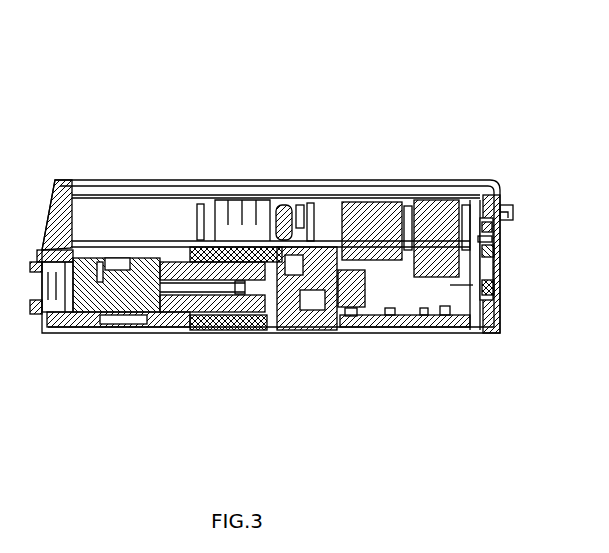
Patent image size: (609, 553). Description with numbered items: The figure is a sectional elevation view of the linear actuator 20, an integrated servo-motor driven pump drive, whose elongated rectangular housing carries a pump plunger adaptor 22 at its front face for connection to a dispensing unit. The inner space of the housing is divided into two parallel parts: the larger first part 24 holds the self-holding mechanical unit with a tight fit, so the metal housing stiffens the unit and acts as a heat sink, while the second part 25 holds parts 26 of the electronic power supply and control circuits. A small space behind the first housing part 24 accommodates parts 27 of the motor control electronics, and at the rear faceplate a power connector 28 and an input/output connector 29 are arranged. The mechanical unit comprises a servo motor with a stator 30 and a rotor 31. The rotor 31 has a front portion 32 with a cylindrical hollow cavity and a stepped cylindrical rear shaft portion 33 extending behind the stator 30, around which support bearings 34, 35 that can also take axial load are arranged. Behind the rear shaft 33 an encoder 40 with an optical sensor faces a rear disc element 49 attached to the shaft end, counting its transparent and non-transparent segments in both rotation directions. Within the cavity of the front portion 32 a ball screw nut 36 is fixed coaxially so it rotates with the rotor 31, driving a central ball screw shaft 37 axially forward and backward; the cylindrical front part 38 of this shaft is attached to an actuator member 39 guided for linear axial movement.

The linear actuator 20 is at (430, 152).
The pump plunger adaptor 22 is at (43, 330).
The first part of the housing 24 is at (93, 215).
The second part of the housing 25 is at (500, 290).
The parts of the electronic power supply and control circuits 26 is at (270, 200).
The parts of the motor control electronics 27 is at (443, 330).
The power connector 28 is at (512, 205).
The input/output connector 29 is at (500, 252).
The stator 30 is at (210, 330).
The rotor 31 is at (227, 330).
The front portion of the rotor 32 is at (182, 330).
The rear shaft portion 33 is at (323, 330).
The support bearing 34 is at (300, 340).
The support bearing 35 is at (303, 343).
The ball screw nut 36 is at (133, 330).
The ball screw shaft 37 is at (147, 330).
The front part of the ball screw shaft 38 is at (130, 285).
The actuator member 39 is at (65, 337).
The encoder 40 is at (377, 330).
The rear disc element 49 is at (350, 330).